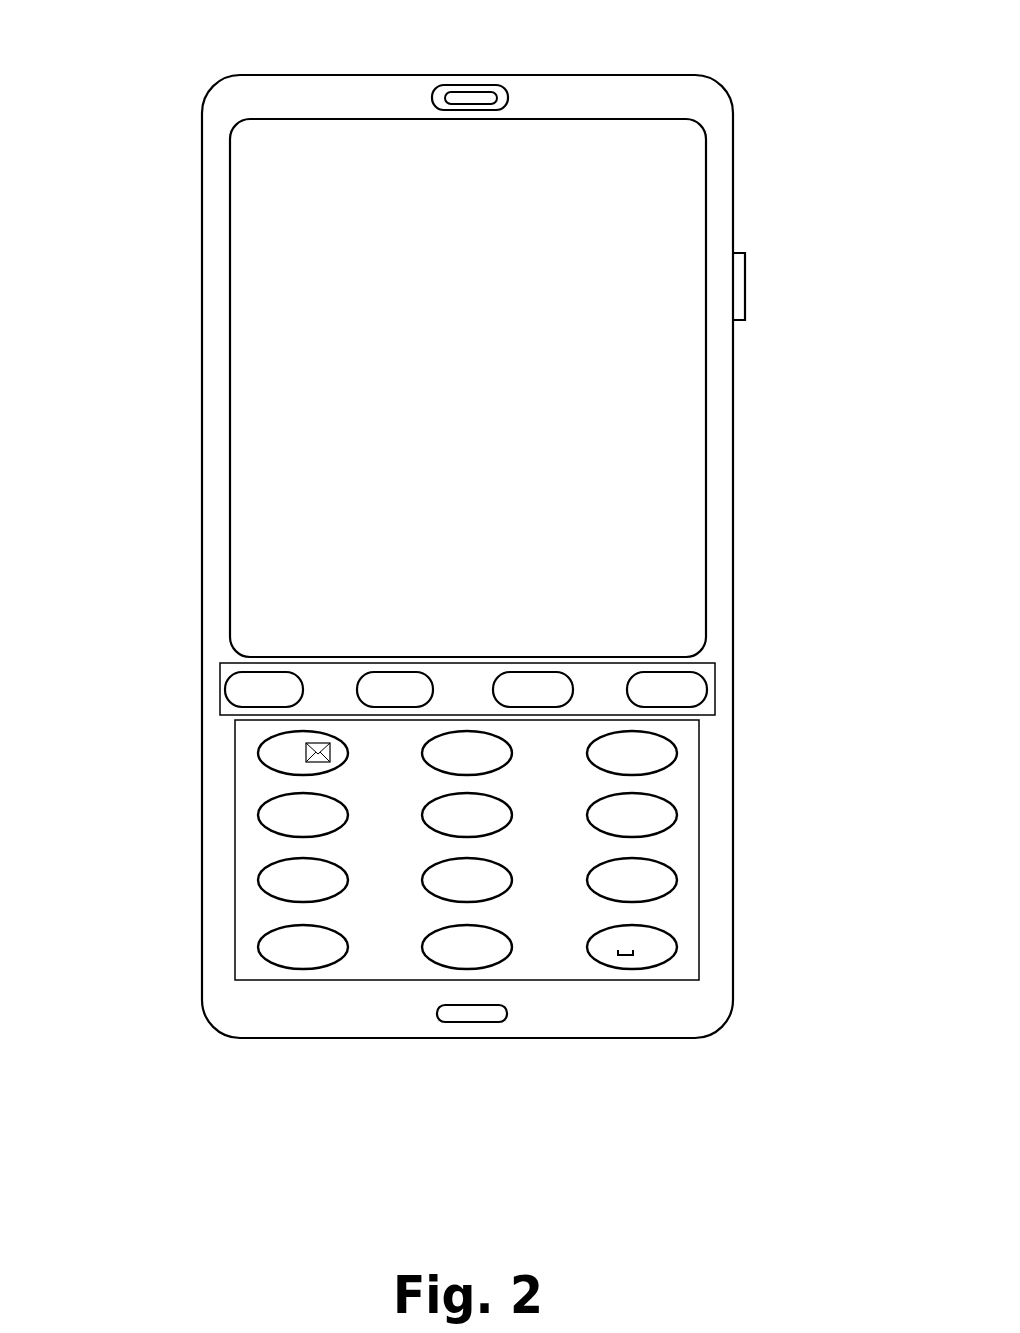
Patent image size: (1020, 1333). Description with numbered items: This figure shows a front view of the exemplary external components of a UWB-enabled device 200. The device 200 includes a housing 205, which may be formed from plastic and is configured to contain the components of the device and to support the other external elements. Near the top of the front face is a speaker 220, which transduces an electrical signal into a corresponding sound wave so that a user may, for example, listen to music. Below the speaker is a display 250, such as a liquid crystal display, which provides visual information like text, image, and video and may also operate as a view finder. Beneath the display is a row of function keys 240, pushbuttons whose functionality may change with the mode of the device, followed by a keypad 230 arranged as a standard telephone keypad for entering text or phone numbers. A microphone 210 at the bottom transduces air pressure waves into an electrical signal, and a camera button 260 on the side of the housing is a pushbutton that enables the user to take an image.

The device 200 is at (212, 36).
The housing 205 is at (203, 487).
The microphone 210 is at (490, 1022).
The speaker 220 is at (483, 86).
The keypad 230 is at (748, 968).
The function keys 240 is at (748, 668).
The display 250 is at (686, 408).
The camera button 260 is at (737, 288).